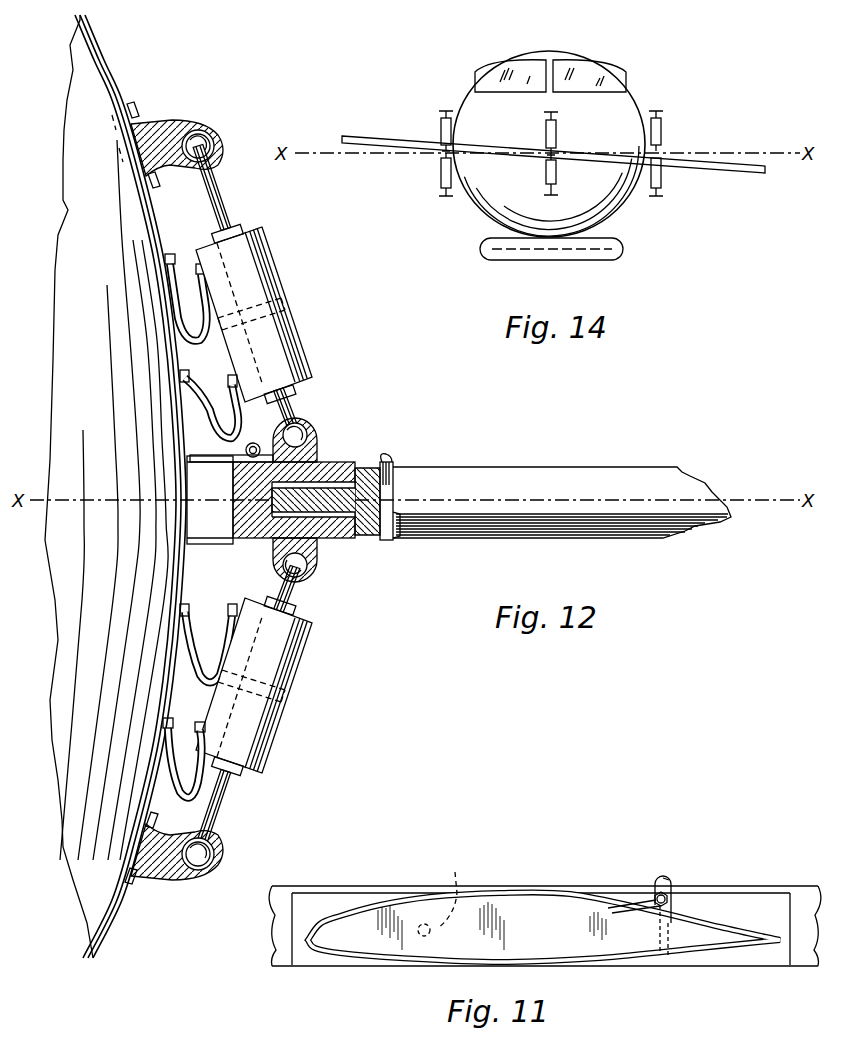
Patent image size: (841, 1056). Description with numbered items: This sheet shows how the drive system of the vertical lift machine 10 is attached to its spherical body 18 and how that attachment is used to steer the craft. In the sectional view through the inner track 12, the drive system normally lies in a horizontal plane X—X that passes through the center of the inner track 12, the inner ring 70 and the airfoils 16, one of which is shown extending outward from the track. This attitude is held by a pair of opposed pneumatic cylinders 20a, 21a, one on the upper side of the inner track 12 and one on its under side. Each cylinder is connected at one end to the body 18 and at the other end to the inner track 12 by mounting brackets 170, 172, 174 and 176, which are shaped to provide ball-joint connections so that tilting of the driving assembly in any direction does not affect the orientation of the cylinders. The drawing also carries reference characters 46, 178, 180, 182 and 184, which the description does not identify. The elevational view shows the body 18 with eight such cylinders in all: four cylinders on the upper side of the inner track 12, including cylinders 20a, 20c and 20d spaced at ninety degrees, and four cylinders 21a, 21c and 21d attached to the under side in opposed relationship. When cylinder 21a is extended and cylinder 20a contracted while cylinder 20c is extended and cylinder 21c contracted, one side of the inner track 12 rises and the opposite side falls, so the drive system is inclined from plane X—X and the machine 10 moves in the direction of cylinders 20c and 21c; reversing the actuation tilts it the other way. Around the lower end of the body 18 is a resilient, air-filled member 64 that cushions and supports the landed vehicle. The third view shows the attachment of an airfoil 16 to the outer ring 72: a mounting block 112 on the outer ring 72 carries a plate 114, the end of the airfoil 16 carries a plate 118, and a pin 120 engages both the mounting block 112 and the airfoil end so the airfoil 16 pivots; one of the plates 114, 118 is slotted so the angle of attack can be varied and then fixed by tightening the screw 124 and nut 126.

In FIG. 14, the vertical lift machine 10 is at (608, 76).
In FIG. 12, the inner track 12 is at (351, 440).
In FIG. 12, the airfoil 16 is at (438, 466).
In FIG. 11, the airfoil 16 is at (372, 908).
In FIG. 12, the body 18 is at (108, 63).
In FIG. 12, the pneumatic cylinder 20a is at (281, 282).
In FIG. 14, the pneumatic cylinder 20a is at (440, 130).
In FIG. 12, the pneumatic cylinder 21a is at (298, 681).
In FIG. 14, the pneumatic cylinder 21a is at (440, 176).
In FIG. 14, the pneumatic cylinder 20c is at (667, 138).
In FIG. 14, the pneumatic cylinder 21c is at (667, 180).
In FIG. 14, the pneumatic cylinder 20d is at (559, 138).
In FIG. 14, the pneumatic cylinder 21d is at (559, 178).
In FIG. 12, the hub mounting plate 46 is at (198, 441).
In FIG. 14, the resilient member 64 is at (622, 249).
In FIG. 12, the inner ring 70 is at (382, 461).
In FIG. 11, the outer ring 72 is at (296, 870).
In FIG. 11, the mounting block 112 is at (344, 870).
In FIG. 11, the plate 114 is at (656, 884).
In FIG. 11, the plate 118 is at (672, 898).
In FIG. 11, the pin 120 is at (437, 896).
In FIG. 11, the screw 124 is at (672, 883).
In FIG. 11, the nut 126 is at (642, 902).
In FIG. 12, the mounting bracket 170 is at (160, 122).
In FIG. 12, the mounting bracket 172 is at (158, 878).
In FIG. 12, the mounting bracket 174 is at (311, 424).
In FIG. 12, the mounting bracket 176 is at (313, 577).
In FIG. 12, the hydraulic hose 178 is at (174, 262).
In FIG. 12, the hydraulic hose 180 is at (194, 790).
In FIG. 12, the hydraulic hose 182 is at (207, 388).
In FIG. 12, the hydraulic hose 184 is at (196, 612).